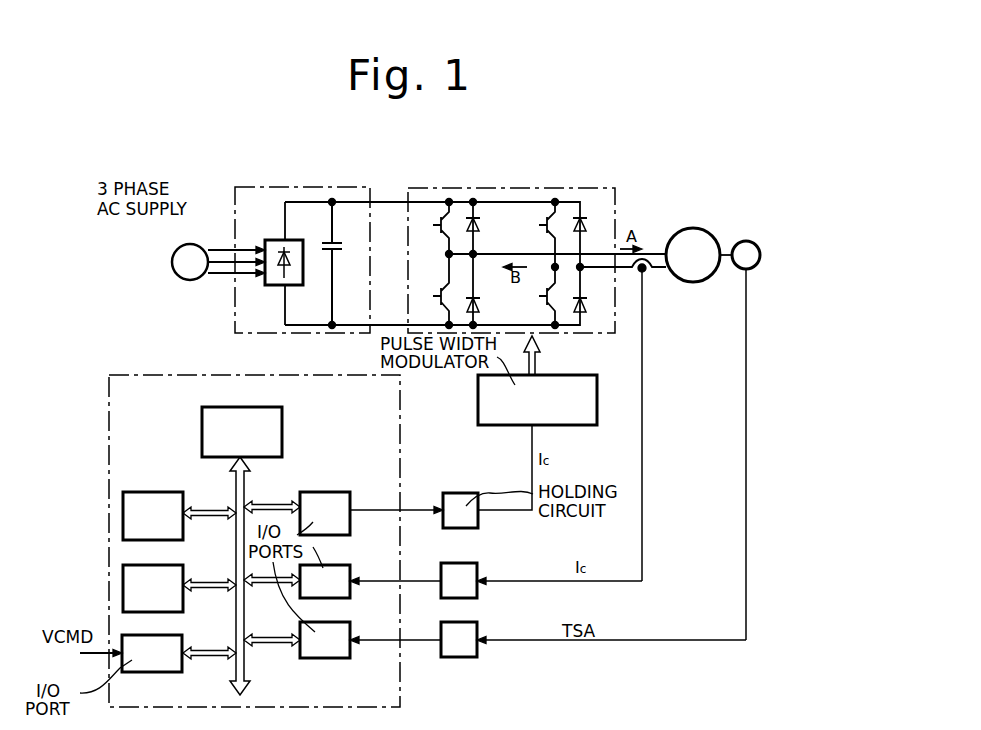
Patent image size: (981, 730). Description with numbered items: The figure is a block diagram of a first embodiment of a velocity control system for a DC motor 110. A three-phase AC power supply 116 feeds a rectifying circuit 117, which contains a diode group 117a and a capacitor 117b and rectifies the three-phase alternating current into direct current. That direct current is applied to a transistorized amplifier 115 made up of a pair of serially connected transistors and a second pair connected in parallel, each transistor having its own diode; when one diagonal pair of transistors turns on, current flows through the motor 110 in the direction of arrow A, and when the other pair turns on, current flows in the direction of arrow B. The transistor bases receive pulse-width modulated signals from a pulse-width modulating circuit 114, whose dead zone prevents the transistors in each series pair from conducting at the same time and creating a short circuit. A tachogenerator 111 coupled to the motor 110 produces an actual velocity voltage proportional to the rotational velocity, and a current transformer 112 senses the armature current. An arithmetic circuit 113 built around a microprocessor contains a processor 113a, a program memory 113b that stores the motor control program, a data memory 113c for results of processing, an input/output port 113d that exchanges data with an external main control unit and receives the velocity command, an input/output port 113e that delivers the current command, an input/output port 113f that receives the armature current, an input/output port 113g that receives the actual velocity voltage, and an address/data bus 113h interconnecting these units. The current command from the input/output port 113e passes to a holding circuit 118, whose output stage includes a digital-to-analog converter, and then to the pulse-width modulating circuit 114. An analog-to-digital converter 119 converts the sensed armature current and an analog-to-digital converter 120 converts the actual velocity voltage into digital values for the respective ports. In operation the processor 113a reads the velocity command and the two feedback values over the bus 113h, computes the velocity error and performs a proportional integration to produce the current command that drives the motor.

The DC motor 110 is at (693, 282).
The tachogenerator 111 is at (746, 241).
The current transformer 112 is at (654, 252).
The arithmetic circuit 113 is at (133, 386).
The processor 113a is at (276, 433).
The program memory 113b is at (169, 492).
The data memory 113c is at (185, 565).
The input/output port 113d is at (180, 672).
The input/output port 113e is at (349, 492).
The input/output port 113f is at (349, 565).
The input/output port 113g is at (340, 655).
The address/data bus 113h is at (245, 662).
The pulse-width modulating circuit 114 is at (486, 403).
The transistorized amplifier 115 is at (525, 188).
The three-phase AC power supply 116 is at (192, 281).
The rectifying circuit 117 is at (355, 187).
The diode group 117a is at (270, 285).
The capacitor 117b is at (336, 251).
The holding circuit 118 is at (480, 522).
The analog-to-digital converter 119 is at (478, 595).
The analog-to-digital converter 120 is at (478, 655).